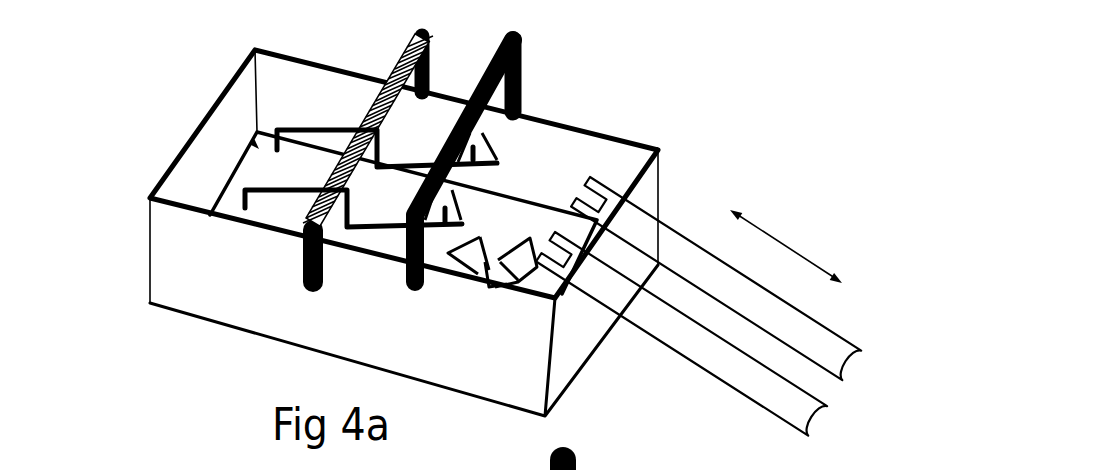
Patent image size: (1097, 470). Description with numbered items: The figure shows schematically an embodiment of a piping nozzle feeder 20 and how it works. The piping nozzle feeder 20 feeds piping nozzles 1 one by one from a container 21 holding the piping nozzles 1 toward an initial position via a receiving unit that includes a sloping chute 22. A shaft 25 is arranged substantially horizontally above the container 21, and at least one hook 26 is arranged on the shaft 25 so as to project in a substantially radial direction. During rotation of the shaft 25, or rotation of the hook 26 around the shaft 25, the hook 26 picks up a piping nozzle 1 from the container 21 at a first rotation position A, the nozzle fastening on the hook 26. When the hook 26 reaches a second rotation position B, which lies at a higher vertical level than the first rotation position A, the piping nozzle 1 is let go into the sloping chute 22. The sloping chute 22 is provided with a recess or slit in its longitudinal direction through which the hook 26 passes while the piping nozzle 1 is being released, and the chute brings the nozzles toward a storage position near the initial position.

The piping nozzle 1 is at (458, 192).
The piping nozzle feeder 20 is at (672, 97).
The container 21 is at (575, 333).
The sloping chute 22 is at (760, 380).
The shaft 25 is at (317, 208).
The hook 26 is at (312, 128).
The first rotation position A is at (256, 146).
The second rotation position B is at (505, 138).